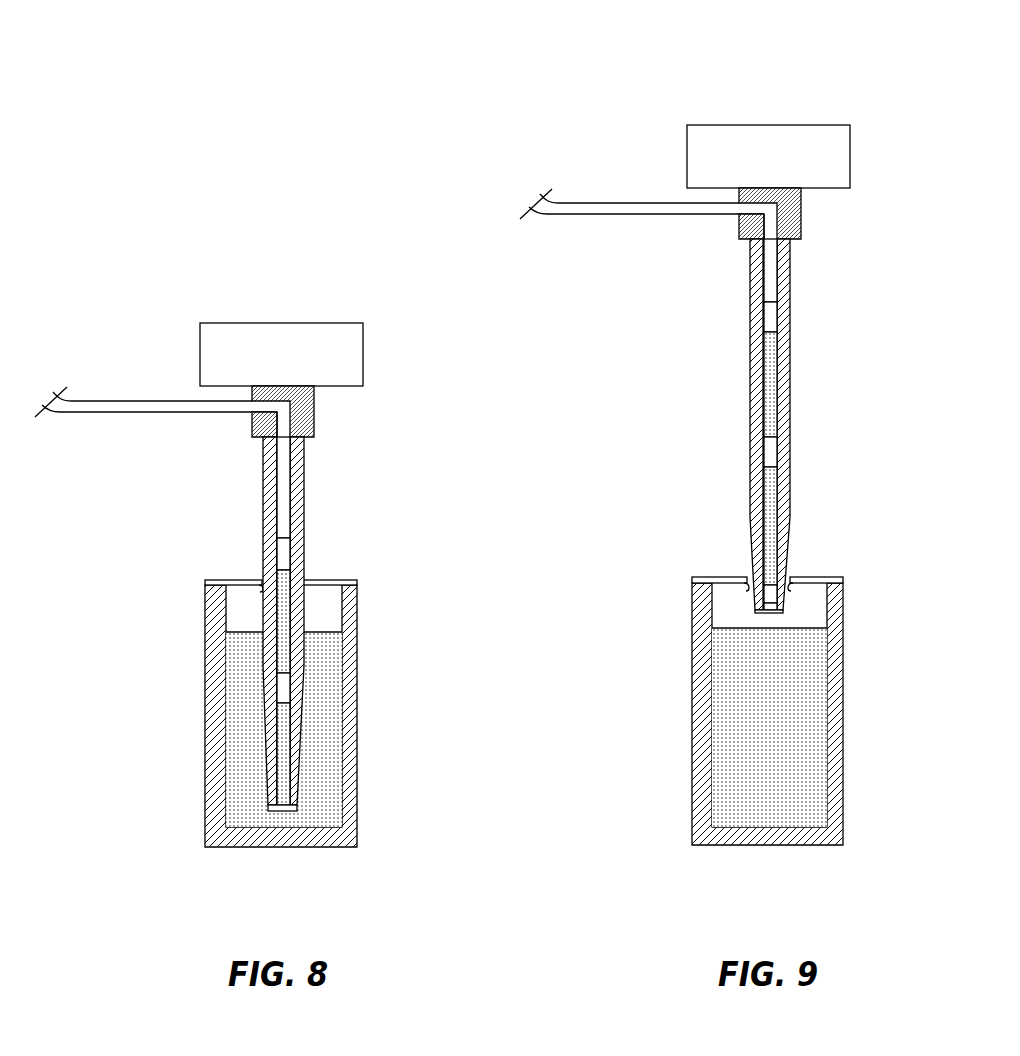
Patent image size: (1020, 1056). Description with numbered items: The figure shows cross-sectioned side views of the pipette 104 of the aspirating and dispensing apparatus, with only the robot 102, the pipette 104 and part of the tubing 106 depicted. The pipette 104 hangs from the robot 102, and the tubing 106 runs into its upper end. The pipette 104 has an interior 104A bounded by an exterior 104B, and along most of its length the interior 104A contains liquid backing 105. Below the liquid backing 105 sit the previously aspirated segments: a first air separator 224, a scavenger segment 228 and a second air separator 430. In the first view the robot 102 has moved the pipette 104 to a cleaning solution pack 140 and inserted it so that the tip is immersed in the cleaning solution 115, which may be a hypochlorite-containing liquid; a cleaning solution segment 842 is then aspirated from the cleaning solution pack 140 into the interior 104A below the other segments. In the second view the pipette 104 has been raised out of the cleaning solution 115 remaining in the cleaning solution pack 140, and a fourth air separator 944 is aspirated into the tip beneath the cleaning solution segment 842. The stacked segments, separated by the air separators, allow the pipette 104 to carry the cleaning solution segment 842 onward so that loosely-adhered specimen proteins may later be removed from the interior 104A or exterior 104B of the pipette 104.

In FIG. 8, the robot 102 is at (320, 323).
In FIG. 9, the robot 102 is at (808, 125).
In FIG. 8, the pipette 104 is at (282, 611).
In FIG. 9, the pipette 104 is at (749, 421).
In FIG. 8, the interior of the pipette 104A is at (277, 497).
In FIG. 9, the interior of the pipette 104A is at (764, 300).
In FIG. 8, the exterior of the pipette 104B is at (263, 468).
In FIG. 9, the exterior of the pipette 104B is at (750, 272).
In FIG. 8, the liquid backing 105 is at (283, 515).
In FIG. 9, the liquid backing 105 is at (768, 252).
In FIG. 8, the tubing 106 is at (140, 413).
In FIG. 9, the tubing 106 is at (627, 215).
In FIG. 8, the cleaning solution 115 is at (330, 678).
In FIG. 9, the cleaning solution 115 is at (790, 736).
In FIG. 8, the cleaning solution pack 140 is at (272, 713).
In FIG. 9, the cleaning solution pack 140 is at (791, 684).
In FIG. 8, the first air separator 224 is at (283, 552).
In FIG. 9, the first air separator 224 is at (772, 318).
In FIG. 8, the scavenger segment 228 is at (283, 617).
In FIG. 9, the scavenger segment 228 is at (767, 396).
In FIG. 8, the second air separator 430 is at (283, 690).
In FIG. 9, the second air separator 430 is at (770, 452).
In FIG. 8, the cleaning solution segment 842 is at (283, 758).
In FIG. 9, the cleaning solution segment 842 is at (767, 512).
In FIG. 9, the fourth air separator 944 is at (760, 600).